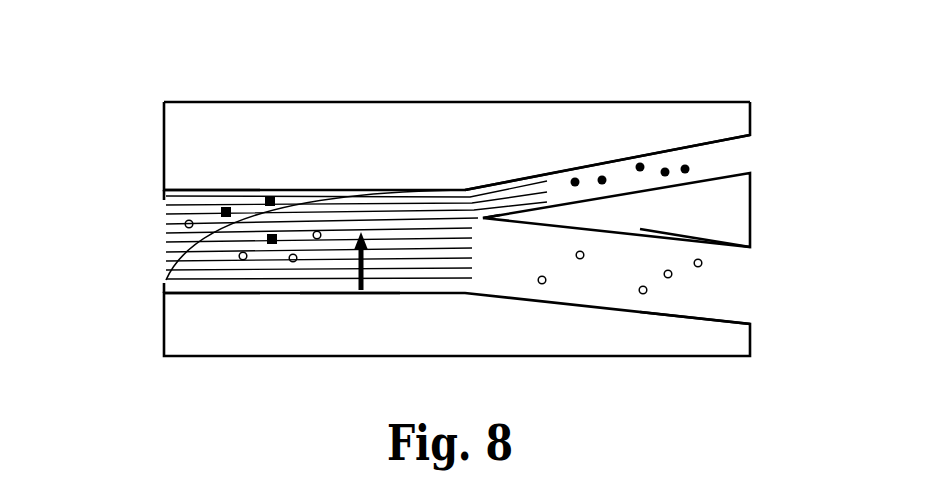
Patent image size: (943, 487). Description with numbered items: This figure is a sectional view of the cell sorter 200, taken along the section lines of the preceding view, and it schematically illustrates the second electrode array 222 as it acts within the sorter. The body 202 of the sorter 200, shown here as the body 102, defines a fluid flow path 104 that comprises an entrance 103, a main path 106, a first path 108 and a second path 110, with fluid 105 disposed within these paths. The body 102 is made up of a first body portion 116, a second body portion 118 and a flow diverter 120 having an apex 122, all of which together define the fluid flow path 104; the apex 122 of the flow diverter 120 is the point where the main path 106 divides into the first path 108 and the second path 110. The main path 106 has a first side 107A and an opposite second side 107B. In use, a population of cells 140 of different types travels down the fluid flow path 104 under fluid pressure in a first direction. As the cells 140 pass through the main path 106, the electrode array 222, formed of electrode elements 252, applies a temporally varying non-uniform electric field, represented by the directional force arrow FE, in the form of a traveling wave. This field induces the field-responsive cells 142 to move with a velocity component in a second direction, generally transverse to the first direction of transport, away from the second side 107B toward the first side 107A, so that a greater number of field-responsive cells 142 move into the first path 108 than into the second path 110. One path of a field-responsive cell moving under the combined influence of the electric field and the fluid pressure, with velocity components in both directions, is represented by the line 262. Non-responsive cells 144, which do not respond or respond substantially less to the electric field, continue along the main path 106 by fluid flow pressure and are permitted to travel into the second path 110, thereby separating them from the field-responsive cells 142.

The sorter 200 is at (402, 109).
The body 202 is at (260, 101).
The body 102 is at (515, 183).
The first body portion 116 is at (567, 137).
The second body portion 118 is at (525, 327).
The flow diverter 120 is at (742, 209).
The apex 122 is at (492, 225).
The first path 108 is at (742, 157).
The non-responsive cells 144 is at (722, 268).
The second path 110 is at (722, 290).
The main path 106 is at (344, 302).
The second side 107B is at (197, 295).
The first side 107A is at (165, 193).
The fluid flow path 104 is at (156, 286).
The entrance 103 is at (160, 258).
The second electrode array 222 is at (157, 238).
The electrode elements 252 is at (165, 222).
The cells 140 is at (225, 199).
The line 262 is at (277, 213).
The field-responsive cells 142 is at (672, 158).
The fluid 105 is at (626, 273).
The directional force arrow FE is at (363, 265).